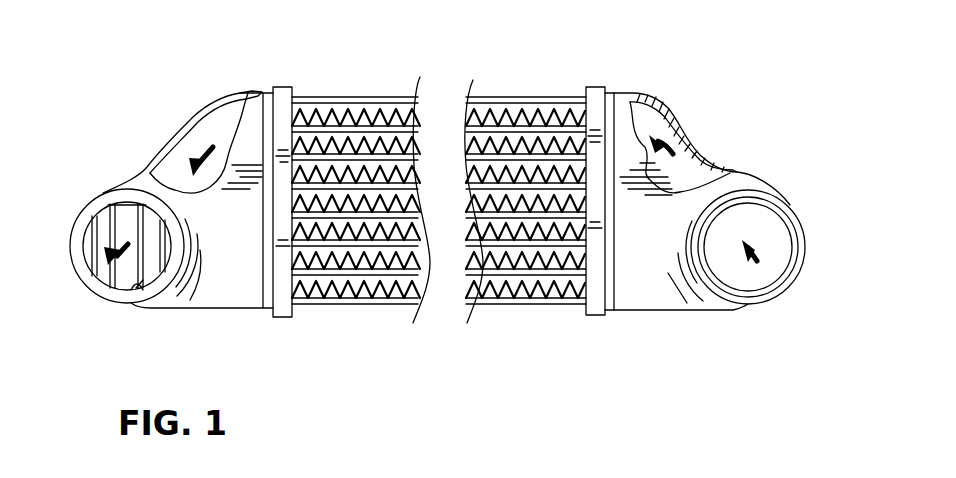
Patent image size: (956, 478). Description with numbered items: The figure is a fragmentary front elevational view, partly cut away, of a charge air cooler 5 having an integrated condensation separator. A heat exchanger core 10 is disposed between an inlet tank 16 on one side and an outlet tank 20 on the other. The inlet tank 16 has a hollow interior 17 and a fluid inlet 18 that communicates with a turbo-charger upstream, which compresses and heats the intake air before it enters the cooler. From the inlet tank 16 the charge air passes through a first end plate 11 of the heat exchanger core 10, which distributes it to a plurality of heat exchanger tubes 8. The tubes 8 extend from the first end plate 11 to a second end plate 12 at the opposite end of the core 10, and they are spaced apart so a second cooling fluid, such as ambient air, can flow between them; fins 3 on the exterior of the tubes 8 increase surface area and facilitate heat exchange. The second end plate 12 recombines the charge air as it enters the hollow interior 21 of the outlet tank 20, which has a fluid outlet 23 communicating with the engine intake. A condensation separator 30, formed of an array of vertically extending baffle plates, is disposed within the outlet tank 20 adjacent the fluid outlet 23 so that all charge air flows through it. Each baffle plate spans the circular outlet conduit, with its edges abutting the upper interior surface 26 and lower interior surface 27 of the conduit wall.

The charge air cooler 5 is at (213, 62).
The fins 3 is at (362, 110).
The heat exchanger tubes 8 is at (530, 97).
The heat exchanger core 10 is at (521, 337).
The first end plate 11 is at (595, 88).
The second end plate 12 is at (273, 88).
The inlet tank 16 is at (775, 178).
The hollow interior 17 is at (698, 165).
The fluid inlet 18 is at (777, 243).
The outlet tank 20 is at (115, 170).
The hollow interior 21 is at (205, 133).
The fluid outlet 23 is at (82, 250).
The upper interior surface 26 is at (113, 213).
The lower interior surface 27 is at (147, 282).
The condensation separator 30 is at (132, 277).